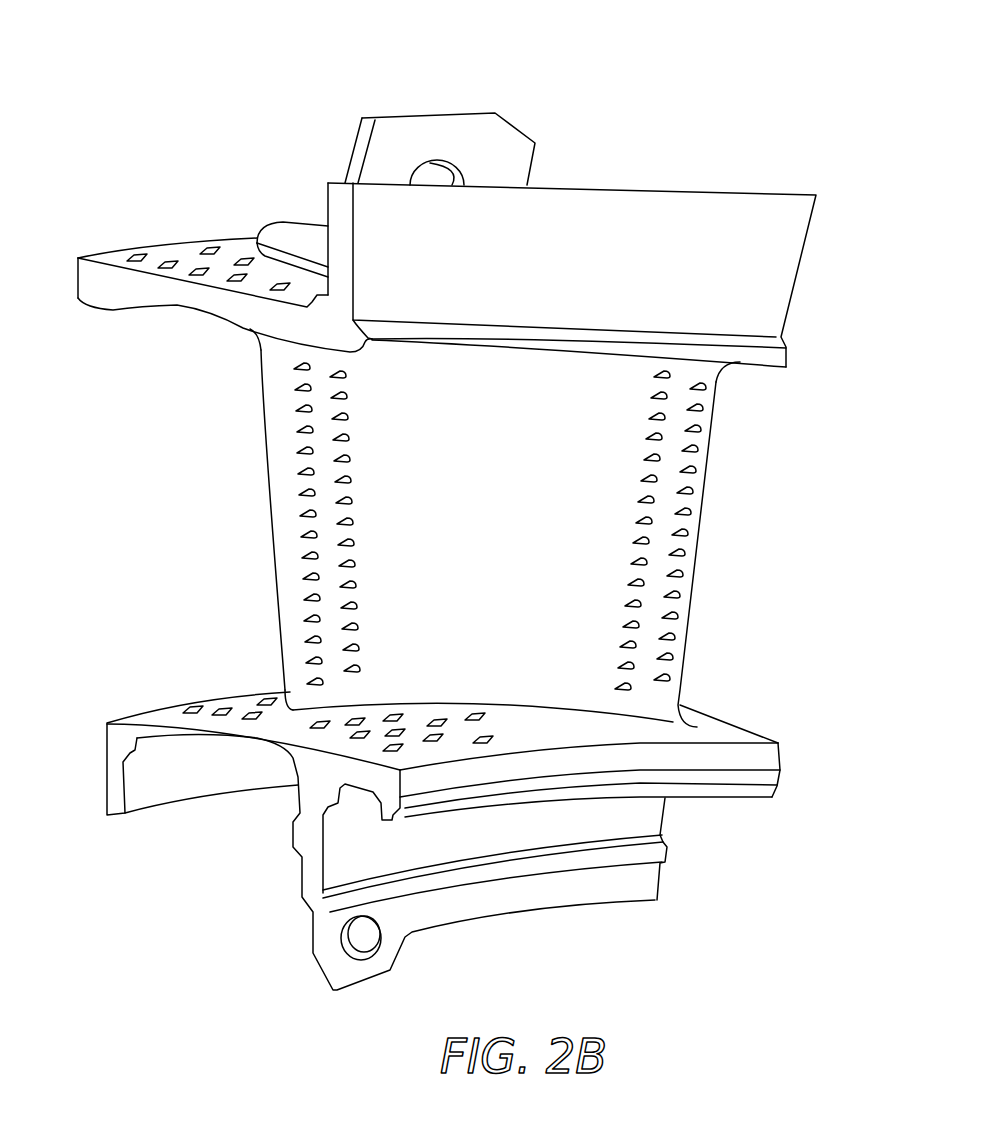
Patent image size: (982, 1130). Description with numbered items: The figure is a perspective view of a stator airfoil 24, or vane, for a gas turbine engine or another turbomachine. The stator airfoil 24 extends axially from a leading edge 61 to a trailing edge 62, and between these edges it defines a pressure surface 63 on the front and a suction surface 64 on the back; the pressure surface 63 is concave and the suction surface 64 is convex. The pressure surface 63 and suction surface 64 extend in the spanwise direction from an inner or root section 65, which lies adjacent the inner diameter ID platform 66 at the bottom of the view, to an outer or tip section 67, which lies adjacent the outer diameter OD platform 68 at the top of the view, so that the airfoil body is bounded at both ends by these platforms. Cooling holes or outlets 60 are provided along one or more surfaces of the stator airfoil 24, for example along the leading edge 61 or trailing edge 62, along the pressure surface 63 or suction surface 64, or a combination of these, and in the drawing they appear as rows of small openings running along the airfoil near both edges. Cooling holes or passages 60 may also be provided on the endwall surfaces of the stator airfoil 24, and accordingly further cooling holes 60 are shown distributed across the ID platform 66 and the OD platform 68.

The stator airfoil 24 is at (110, 102).
The cooling holes 60 is at (208, 248).
The leading edge 61 is at (263, 402).
The trailing edge 62 is at (693, 590).
The pressure surface 63 is at (405, 530).
The suction surface 64 is at (702, 527).
The inner section 65 is at (300, 690).
The ID platform 66 is at (767, 753).
The outer section 67 is at (277, 358).
The OD platform 68 is at (97, 292).